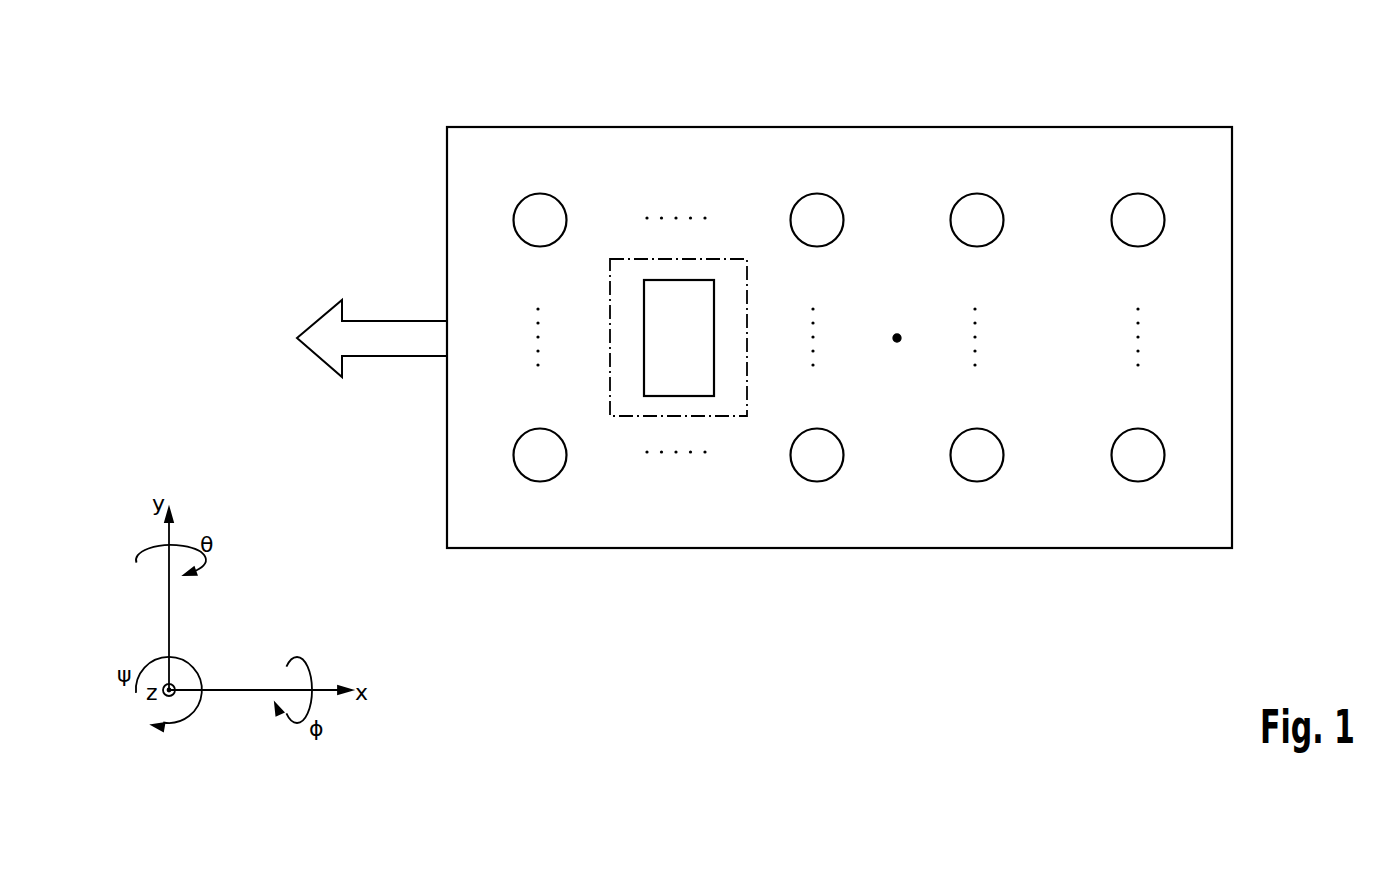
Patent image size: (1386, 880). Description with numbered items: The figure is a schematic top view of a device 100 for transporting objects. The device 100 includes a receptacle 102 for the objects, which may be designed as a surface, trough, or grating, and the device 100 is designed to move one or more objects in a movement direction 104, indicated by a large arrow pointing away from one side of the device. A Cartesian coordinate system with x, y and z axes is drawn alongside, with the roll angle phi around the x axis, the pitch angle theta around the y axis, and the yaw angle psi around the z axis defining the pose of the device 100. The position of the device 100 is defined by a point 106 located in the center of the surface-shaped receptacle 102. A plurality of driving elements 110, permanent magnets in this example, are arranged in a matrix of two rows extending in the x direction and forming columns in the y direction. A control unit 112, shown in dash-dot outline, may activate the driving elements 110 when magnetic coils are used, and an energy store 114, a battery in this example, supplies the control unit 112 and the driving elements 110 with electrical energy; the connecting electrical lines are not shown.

The device 100 is at (1232, 293).
The receptacle 102 is at (1196, 357).
The movement direction 104 is at (383, 321).
The point 106 is at (900, 333).
The driving element 110 is at (551, 194).
The control unit 112 is at (623, 257).
The energy store 114 is at (682, 280).